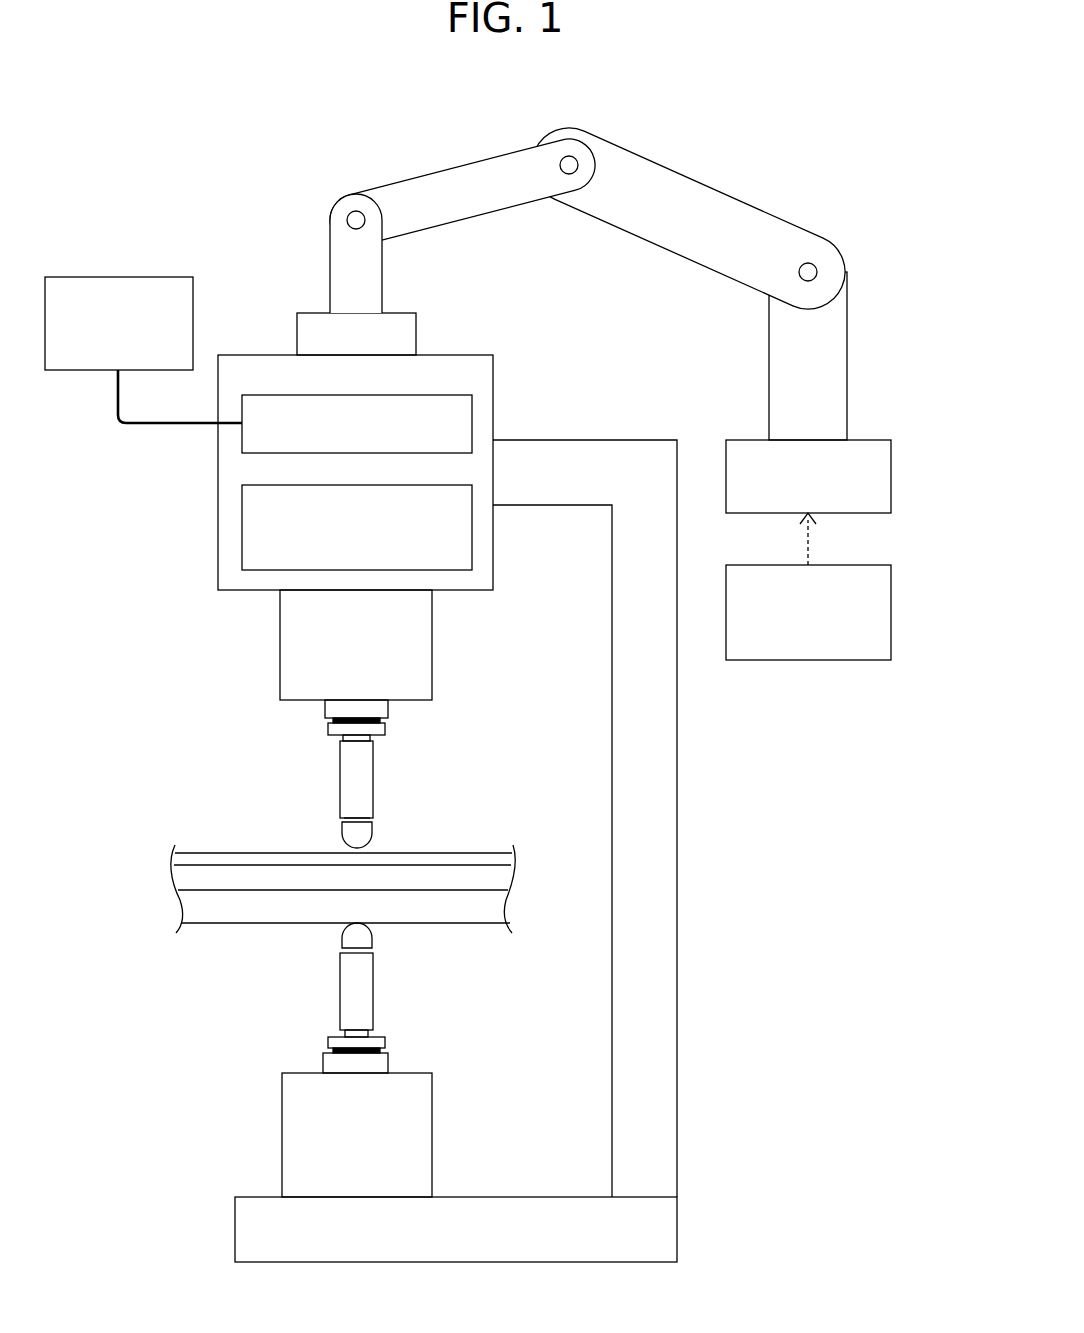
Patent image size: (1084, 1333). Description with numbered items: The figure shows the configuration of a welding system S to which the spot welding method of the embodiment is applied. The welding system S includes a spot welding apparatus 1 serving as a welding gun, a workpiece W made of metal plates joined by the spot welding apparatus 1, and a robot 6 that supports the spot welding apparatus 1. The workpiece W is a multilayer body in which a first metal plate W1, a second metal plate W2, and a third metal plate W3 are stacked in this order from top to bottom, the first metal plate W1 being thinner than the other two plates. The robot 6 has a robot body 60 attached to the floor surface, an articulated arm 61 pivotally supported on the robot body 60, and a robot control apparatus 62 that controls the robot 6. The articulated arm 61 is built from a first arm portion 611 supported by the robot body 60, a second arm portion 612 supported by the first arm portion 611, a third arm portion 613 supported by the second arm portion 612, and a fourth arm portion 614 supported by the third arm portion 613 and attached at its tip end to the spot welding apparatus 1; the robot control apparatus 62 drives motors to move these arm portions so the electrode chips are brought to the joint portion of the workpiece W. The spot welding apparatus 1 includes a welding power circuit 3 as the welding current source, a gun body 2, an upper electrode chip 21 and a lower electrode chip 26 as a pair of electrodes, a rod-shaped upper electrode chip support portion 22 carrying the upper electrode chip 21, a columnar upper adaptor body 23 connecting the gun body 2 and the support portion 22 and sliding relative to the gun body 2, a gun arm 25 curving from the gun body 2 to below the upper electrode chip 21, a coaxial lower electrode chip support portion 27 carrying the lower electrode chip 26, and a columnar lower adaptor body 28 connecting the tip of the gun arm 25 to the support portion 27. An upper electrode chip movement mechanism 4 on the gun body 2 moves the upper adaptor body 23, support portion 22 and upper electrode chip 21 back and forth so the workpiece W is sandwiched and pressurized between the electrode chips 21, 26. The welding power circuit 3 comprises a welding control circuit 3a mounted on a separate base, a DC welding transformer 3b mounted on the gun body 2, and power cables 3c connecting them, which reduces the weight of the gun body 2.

The welding system S is at (147, 74).
The spot welding apparatus 1 is at (258, 256).
The gun body 2 is at (459, 355).
The welding power circuit 3 is at (94, 210).
The welding control circuit 3a is at (172, 277).
The DC welding transformer 3b is at (472, 410).
The power cables 3c is at (147, 430).
The upper electrode chip movement mechanism 4 is at (242, 520).
The upper electrode chip 21 is at (342, 836).
The upper electrode chip support portion 22 is at (347, 753).
The upper adaptor body 23 is at (292, 645).
The gun arm 25 is at (598, 447).
The lower electrode chip 26 is at (337, 935).
The lower electrode chip support portion 27 is at (345, 1018).
The lower adaptor body 28 is at (292, 1135).
The robot 6 is at (855, 117).
The robot body 60 is at (891, 478).
The articulated arm 61 is at (668, 130).
The first arm portion 611 is at (835, 362).
The second arm portion 612 is at (766, 217).
The third arm portion 613 is at (455, 178).
The fourth arm portion 614 is at (372, 274).
The robot control apparatus 62 is at (891, 608).
The workpiece W is at (166, 798).
The first metal plate W1 is at (407, 857).
The second metal plate W2 is at (470, 873).
The third metal plate W3 is at (447, 923).